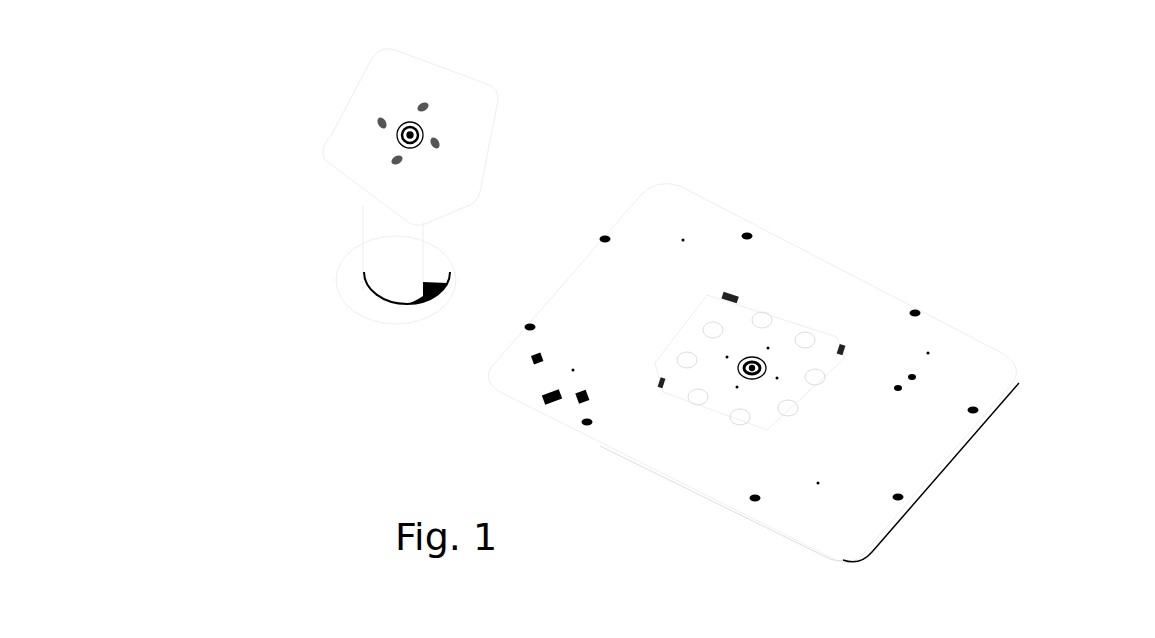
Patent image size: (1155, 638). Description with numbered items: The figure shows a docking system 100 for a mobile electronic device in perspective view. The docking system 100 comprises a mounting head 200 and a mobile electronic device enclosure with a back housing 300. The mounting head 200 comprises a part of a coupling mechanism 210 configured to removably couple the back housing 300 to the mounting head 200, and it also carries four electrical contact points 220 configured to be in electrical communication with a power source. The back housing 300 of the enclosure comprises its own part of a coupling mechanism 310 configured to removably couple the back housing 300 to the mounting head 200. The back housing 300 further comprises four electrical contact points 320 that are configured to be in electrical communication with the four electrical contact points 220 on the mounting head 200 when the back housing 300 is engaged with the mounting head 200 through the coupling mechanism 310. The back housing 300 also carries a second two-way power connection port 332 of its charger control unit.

The docking system 100 is at (899, 46).
The mounting head 200 is at (300, 45).
The coupling mechanism 210 is at (453, 110).
The electrical contact points 220 is at (437, 143).
The back housing 300 is at (1050, 178).
The coupling mechanism 310 is at (778, 332).
The electrical contact points 320 is at (727, 354).
The second two-way power connection port 332 is at (897, 527).